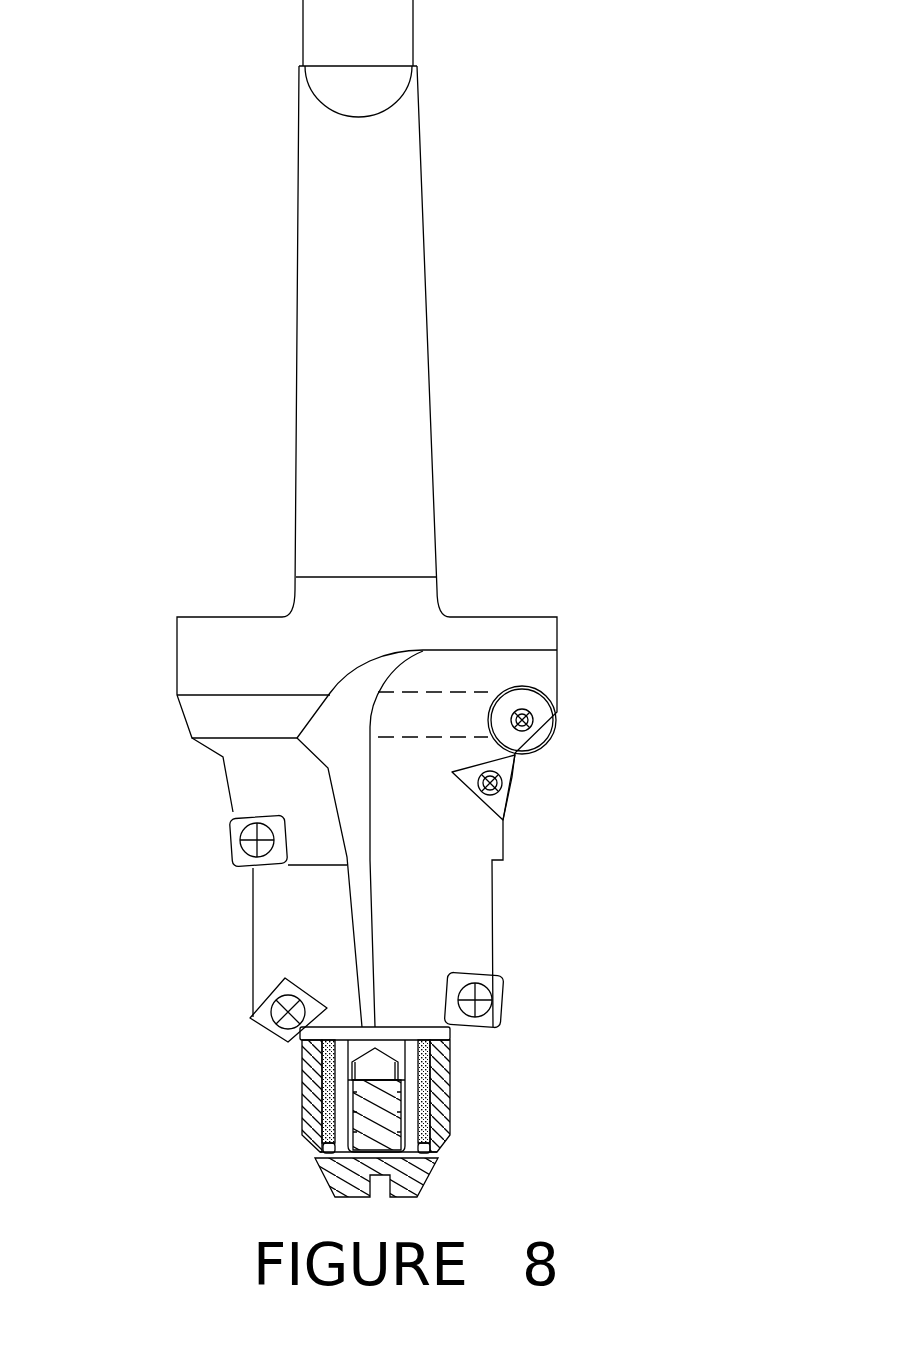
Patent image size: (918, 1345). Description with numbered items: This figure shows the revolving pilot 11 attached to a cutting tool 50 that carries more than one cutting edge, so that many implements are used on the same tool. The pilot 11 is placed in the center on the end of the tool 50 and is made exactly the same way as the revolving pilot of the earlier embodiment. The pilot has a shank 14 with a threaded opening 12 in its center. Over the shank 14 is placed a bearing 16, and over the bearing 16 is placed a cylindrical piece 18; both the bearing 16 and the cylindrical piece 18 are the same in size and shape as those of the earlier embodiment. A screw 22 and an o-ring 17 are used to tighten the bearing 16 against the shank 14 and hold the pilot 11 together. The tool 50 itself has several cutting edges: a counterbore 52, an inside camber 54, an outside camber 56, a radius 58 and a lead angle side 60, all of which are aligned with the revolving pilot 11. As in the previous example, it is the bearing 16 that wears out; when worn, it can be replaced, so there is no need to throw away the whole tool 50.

The revolving pilot 11 is at (342, 1102).
The threaded opening 12 is at (370, 1065).
The shank 14 is at (410, 1105).
The bearing 16 is at (447, 1042).
The o-ring 17 is at (440, 1153).
The cylindrical piece 18 is at (450, 1119).
The screw 22 is at (405, 1183).
The tool 50 is at (470, 840).
The counterbore 52 is at (505, 993).
The inside camber 54 is at (253, 1000).
The outside camber 56 is at (227, 845).
The radius 58 is at (556, 715).
The lead angle side 60 is at (514, 777).